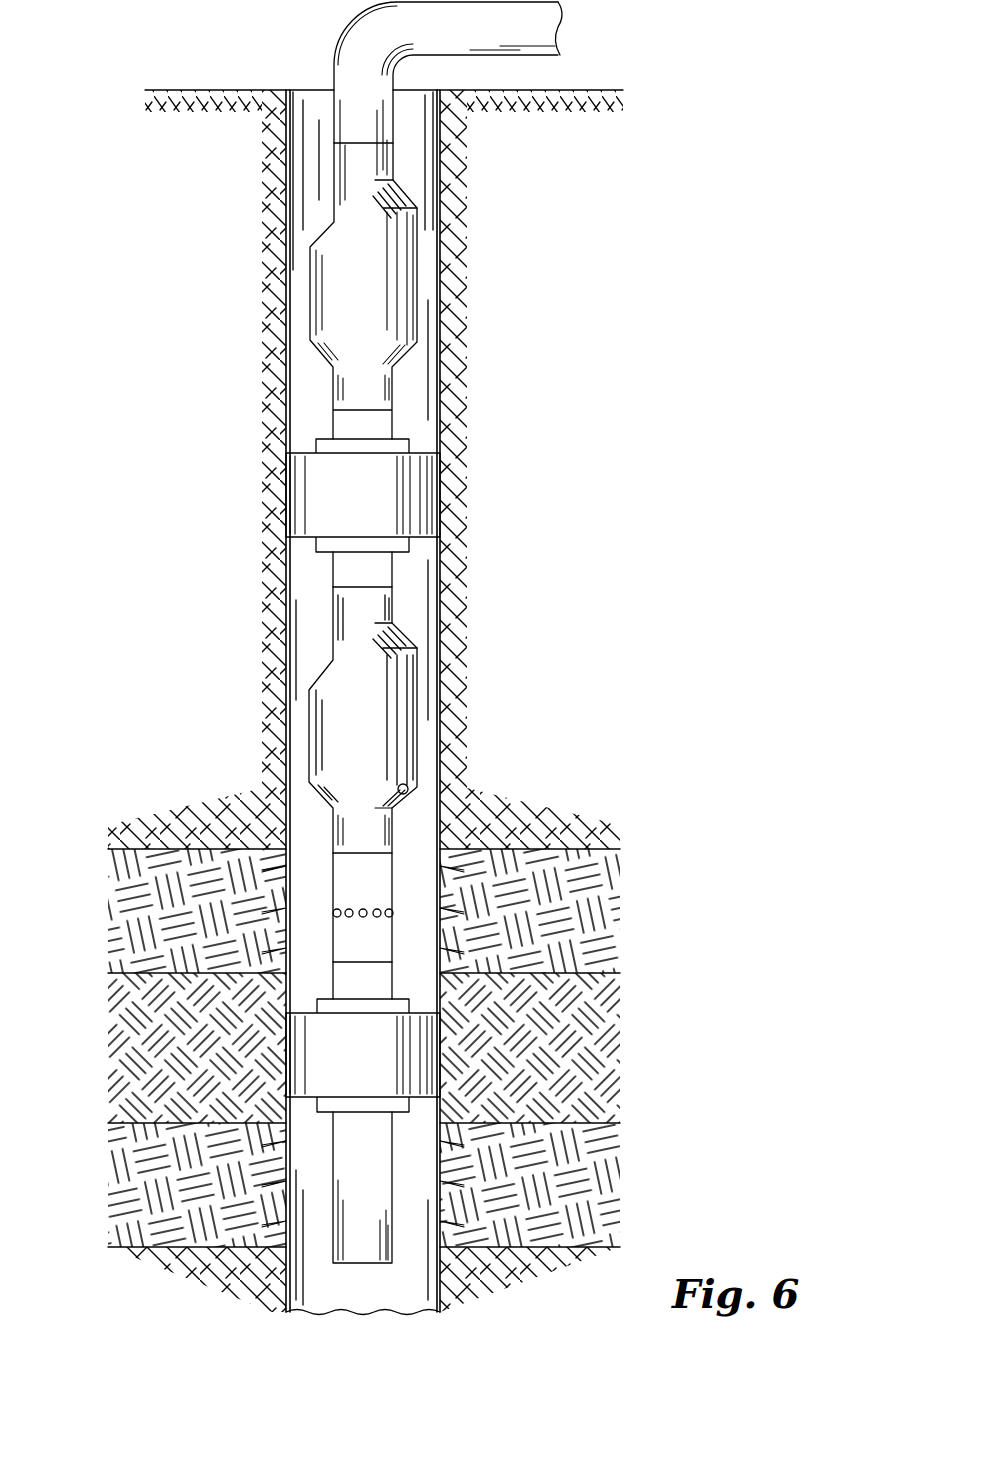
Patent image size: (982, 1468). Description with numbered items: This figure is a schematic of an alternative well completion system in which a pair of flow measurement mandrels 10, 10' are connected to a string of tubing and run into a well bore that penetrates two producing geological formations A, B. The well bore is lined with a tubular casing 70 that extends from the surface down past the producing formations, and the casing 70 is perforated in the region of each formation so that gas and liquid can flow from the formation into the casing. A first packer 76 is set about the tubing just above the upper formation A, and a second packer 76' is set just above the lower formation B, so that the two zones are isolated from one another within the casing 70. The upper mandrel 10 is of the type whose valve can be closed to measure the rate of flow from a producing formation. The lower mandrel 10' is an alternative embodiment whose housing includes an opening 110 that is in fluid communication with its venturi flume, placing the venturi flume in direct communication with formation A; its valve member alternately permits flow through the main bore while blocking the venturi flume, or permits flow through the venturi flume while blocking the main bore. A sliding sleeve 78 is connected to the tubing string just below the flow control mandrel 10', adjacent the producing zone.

The flow measurement mandrel 10 is at (438, 220).
The flow control mandrel 10' is at (429, 720).
The tubular casing 70 is at (437, 632).
The first packer 76 is at (306, 495).
The second packer 76' is at (236, 1055).
The sliding sleeve 78 is at (353, 880).
The opening 110 is at (410, 793).
The upper producing geological formation A is at (147, 900).
The lower producing geological formation B is at (150, 1183).